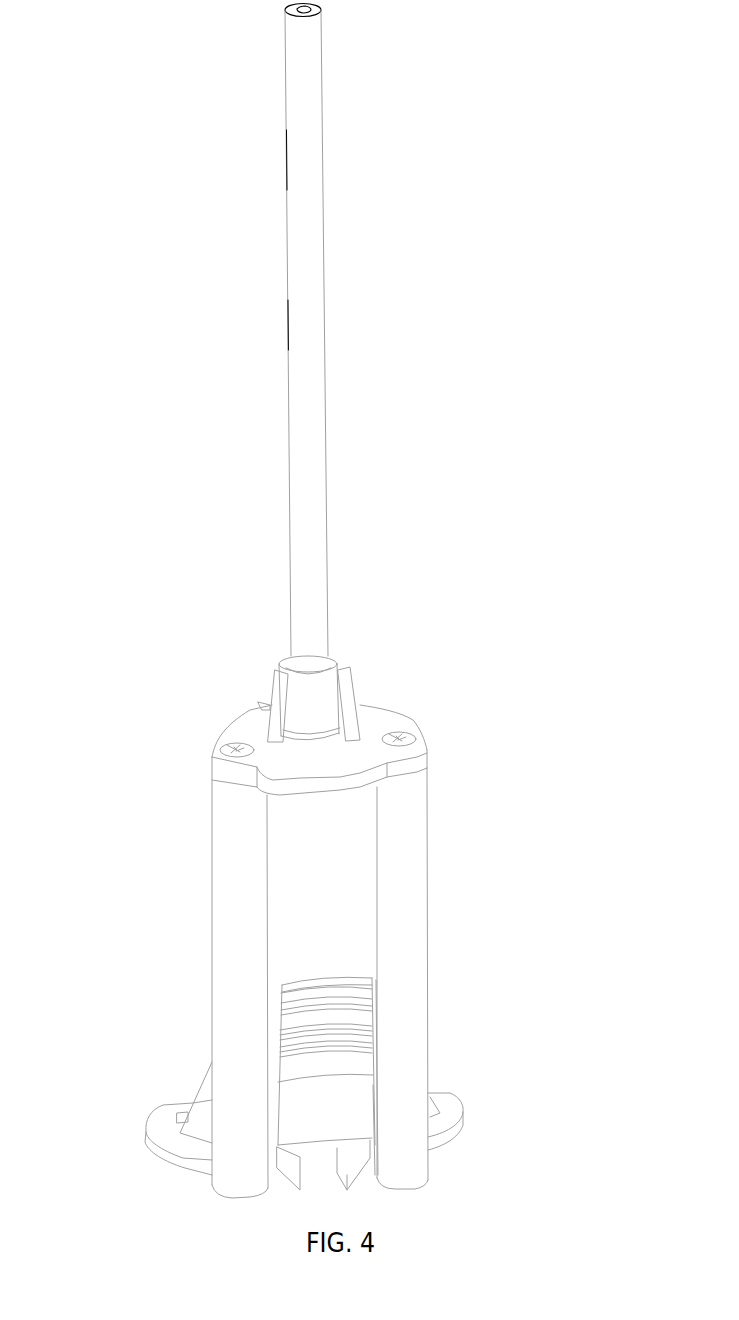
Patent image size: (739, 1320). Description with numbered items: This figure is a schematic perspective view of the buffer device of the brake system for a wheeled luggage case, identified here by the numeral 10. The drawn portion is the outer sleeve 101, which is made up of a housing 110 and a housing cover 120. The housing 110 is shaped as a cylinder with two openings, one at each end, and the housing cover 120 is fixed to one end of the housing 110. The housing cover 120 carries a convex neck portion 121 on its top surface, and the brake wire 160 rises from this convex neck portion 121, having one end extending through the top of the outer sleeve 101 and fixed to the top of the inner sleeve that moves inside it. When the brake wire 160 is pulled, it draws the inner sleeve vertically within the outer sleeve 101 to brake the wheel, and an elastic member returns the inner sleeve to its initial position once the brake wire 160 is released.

The assembly 10 is at (130, 95).
The brake wire 160 is at (313, 287).
The convex neck portion 121 is at (313, 700).
The housing cover 120 is at (373, 722).
The outer sleeve 101 is at (562, 700).
The housing 110 is at (342, 945).